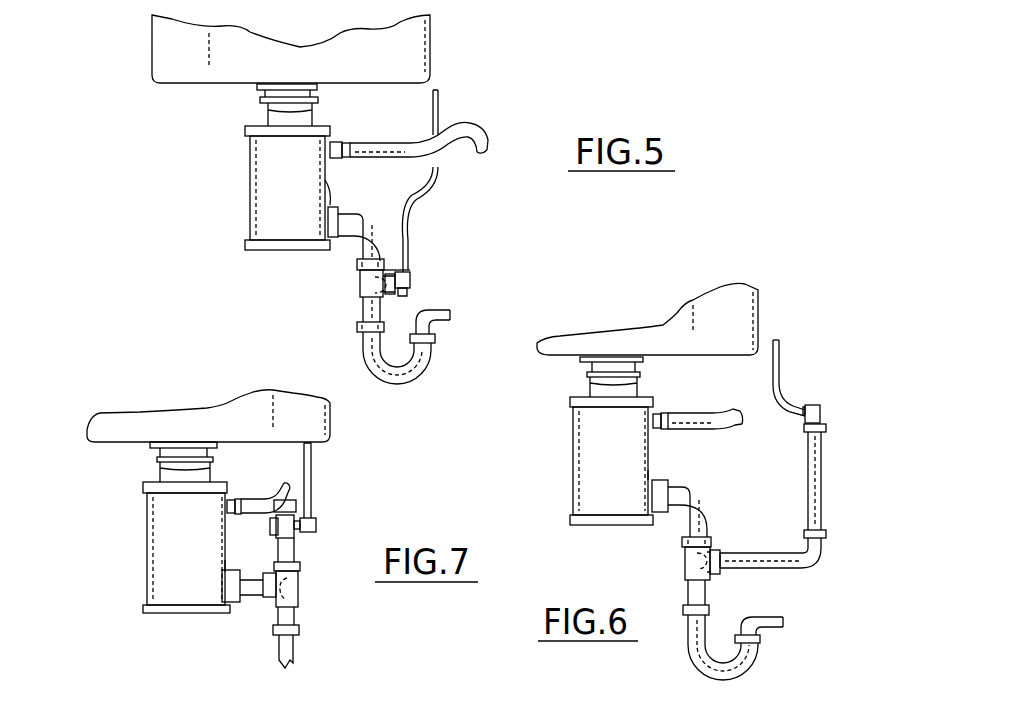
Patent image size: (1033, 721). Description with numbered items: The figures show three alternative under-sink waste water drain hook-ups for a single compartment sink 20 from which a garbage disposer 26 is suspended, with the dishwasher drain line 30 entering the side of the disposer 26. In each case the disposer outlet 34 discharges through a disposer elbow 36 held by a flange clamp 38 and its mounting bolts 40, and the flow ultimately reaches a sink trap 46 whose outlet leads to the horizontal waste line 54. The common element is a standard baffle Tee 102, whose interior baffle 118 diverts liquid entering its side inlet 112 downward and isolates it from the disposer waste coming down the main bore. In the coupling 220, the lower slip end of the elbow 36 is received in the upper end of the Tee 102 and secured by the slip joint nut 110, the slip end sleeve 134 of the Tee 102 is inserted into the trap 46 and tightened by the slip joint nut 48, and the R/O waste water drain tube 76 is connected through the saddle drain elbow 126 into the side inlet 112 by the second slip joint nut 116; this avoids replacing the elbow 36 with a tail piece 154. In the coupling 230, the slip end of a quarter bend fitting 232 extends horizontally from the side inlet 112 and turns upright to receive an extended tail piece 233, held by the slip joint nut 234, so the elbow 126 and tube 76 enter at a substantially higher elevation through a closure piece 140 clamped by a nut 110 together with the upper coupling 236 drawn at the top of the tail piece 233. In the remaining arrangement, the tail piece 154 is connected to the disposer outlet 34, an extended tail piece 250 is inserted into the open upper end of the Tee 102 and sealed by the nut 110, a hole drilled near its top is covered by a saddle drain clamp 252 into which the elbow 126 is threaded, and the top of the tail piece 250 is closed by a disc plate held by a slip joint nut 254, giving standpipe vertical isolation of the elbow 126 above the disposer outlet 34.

In FIG. 5, the single compartment sink 20 is at (148, 72).
In FIG. 6, the single compartment sink 20 is at (763, 292).
In FIG. 7, the single compartment sink 20 is at (96, 443).
In FIG. 5, the garbage disposer 26 is at (247, 149).
In FIG. 6, the garbage disposer 26 is at (569, 465).
In FIG. 7, the garbage disposer 26 is at (141, 505).
In FIG. 5, the dishwasher drain line 30 is at (368, 142).
In FIG. 6, the dishwasher drain line 30 is at (673, 413).
In FIG. 7, the dishwasher drain line 30 is at (248, 497).
In FIG. 6, the disposer outlet 34 is at (648, 492).
In FIG. 7, the disposer outlet 34 is at (222, 572).
In FIG. 5, the disposer elbow 36 is at (373, 212).
In FIG. 6, the disposer elbow 36 is at (701, 485).
In FIG. 7, the flange clamp 38 is at (216, 594).
In FIG. 5, the mounting bolts 40 is at (328, 198).
In FIG. 5, the sink trap 46 is at (428, 371).
In FIG. 6, the sink trap 46 is at (760, 661).
In FIG. 7, the sink trap 46 is at (276, 654).
In FIG. 5, the slip joint nut 48 is at (358, 333).
In FIG. 5, the horizontal waste line 54 is at (456, 316).
In FIG. 6, the horizontal waste line 54 is at (787, 628).
In FIG. 5, the R/O waste water drain tube 76 is at (432, 170).
In FIG. 6, the R/O waste water drain tube 76 is at (781, 352).
In FIG. 7, the R/O waste water drain tube 76 is at (318, 478).
In FIG. 5, the baffle Tee 102 is at (357, 300).
In FIG. 6, the baffle Tee 102 is at (680, 556).
In FIG. 7, the baffle Tee 102 is at (301, 598).
In FIG. 5, the slip joint nut 110 is at (356, 264).
In FIG. 6, the slip joint nut 110 is at (712, 540).
In FIG. 7, the slip joint nut 110 is at (303, 568).
In FIG. 5, the side inlet 112 is at (385, 266).
In FIG. 6, the side inlet 112 is at (718, 551).
In FIG. 5, the second slip joint nut 116 is at (412, 297).
In FIG. 6, the second slip joint nut 116 is at (718, 573).
In FIG. 5, the interior baffle 118 is at (372, 285).
In FIG. 6, the interior baffle 118 is at (690, 568).
In FIG. 7, the interior baffle 118 is at (300, 612).
In FIG. 5, the saddle drain elbow 126 is at (411, 268).
In FIG. 6, the saddle drain elbow 126 is at (812, 404).
In FIG. 7, the saddle drain elbow 126 is at (318, 526).
In FIG. 5, the slip end sleeve 134 is at (362, 315).
In FIG. 6, the elbow fitting closure plate 140 is at (796, 421).
In FIG. 7, the tail piece 154 is at (247, 598).
In FIG. 5, the third embodiment coupling 220 is at (426, 283).
In FIG. 6, the fourth embodiment coupling 230 is at (826, 570).
In FIG. 6, the quarter bend plumbing fitting 232 is at (810, 575).
In FIG. 6, the extended tail piece 233 is at (822, 478).
In FIG. 6, the slip joint nut 234 is at (826, 535).
In FIG. 6, the upper coupling 236 is at (822, 428).
In FIG. 7, the extended tail piece 250 is at (301, 553).
In FIG. 7, the saddle drain clamp 252 is at (318, 540).
In FIG. 7, the slip joint nut 254 is at (300, 498).